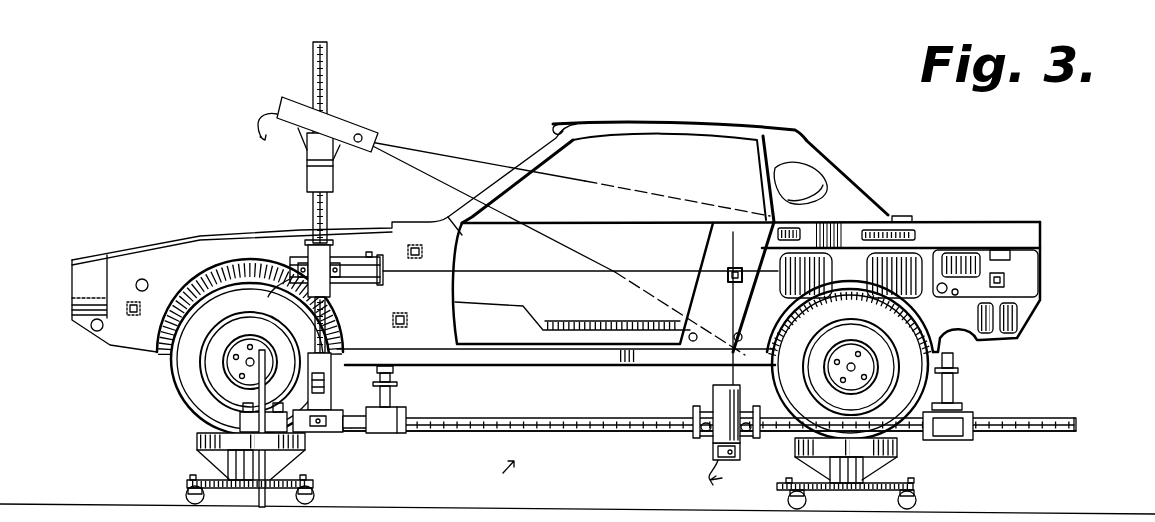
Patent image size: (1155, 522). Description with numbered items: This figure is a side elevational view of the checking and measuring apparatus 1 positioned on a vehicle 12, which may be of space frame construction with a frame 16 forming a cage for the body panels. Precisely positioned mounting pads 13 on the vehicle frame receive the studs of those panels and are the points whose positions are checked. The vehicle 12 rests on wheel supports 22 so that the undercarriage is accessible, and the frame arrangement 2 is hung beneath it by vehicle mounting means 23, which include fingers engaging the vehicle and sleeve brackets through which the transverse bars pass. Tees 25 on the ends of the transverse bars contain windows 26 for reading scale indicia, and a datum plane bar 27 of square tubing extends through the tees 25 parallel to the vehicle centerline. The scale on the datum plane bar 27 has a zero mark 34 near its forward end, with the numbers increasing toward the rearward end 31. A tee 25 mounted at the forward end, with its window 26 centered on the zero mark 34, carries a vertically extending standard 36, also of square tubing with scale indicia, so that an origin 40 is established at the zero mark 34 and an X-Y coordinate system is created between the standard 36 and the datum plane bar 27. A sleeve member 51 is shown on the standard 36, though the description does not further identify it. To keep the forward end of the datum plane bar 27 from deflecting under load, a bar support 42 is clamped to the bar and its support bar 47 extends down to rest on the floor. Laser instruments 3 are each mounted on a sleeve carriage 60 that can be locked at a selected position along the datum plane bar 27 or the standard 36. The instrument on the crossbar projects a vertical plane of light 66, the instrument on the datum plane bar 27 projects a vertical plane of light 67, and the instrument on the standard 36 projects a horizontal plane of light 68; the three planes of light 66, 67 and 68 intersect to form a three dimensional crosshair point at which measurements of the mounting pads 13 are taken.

The checking and measuring apparatus 1 is at (502, 474).
The frame arrangement 2 is at (638, 432).
The laser instrument 3 is at (363, 130).
The vehicle 12 is at (688, 124).
The mounting pad 13 is at (138, 322).
The frame 16 is at (563, 146).
The wheel support 22 is at (200, 452).
The vehicle mounting means 23 is at (406, 414).
The tee 25 is at (353, 436).
The window 26 is at (326, 382).
The datum plane bar 27 is at (585, 432).
The rearward end 31 is at (1050, 418).
The zero mark 34 is at (316, 433).
The standard 36 is at (330, 70).
The origin 40 is at (322, 420).
The bar support 42 is at (240, 419).
The support bar 47 is at (258, 498).
The sleeve 51 is at (306, 182).
The sleeve carriage 60 is at (754, 444).
The plane of light 66 is at (441, 156).
The plane of light 67 is at (716, 386).
The plane of light 68 is at (576, 273).